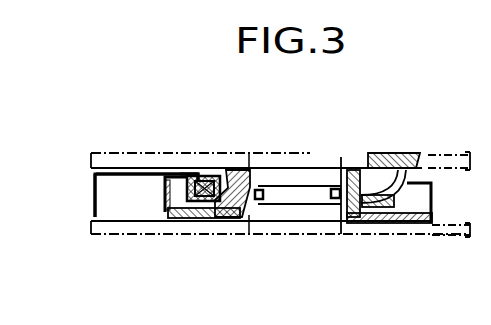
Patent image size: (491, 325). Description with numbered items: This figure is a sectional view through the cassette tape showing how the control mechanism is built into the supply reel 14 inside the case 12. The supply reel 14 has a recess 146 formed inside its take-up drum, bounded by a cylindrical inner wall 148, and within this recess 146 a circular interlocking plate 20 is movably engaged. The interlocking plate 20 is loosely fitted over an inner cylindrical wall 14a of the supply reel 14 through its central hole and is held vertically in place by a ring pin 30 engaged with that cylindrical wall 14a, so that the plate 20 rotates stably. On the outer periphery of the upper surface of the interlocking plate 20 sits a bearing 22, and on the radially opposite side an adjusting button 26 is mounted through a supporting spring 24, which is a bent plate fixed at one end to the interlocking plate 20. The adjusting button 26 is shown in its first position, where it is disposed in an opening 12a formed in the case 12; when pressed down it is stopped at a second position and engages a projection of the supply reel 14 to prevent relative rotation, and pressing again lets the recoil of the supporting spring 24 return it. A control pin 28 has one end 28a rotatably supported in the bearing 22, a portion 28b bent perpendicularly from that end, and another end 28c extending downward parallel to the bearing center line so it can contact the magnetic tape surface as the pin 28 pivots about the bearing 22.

The case 12 is at (250, 146).
The opening 12a is at (425, 150).
The supply reel 14 is at (162, 204).
The inner cylindrical wall 14a is at (232, 190).
The recess 146 is at (188, 219).
The cylindrical inner wall 148 is at (418, 202).
The interlocking plate 20 is at (386, 224).
The bearing 22 is at (203, 178).
The supporting spring 24 is at (366, 175).
The adjusting button 26 is at (403, 156).
The control pin 28 is at (112, 168).
The one end of control pin 28a is at (162, 190).
The bent portion 28b is at (150, 173).
The other end of control pin 28c is at (93, 197).
The ring pin 30 is at (223, 183).